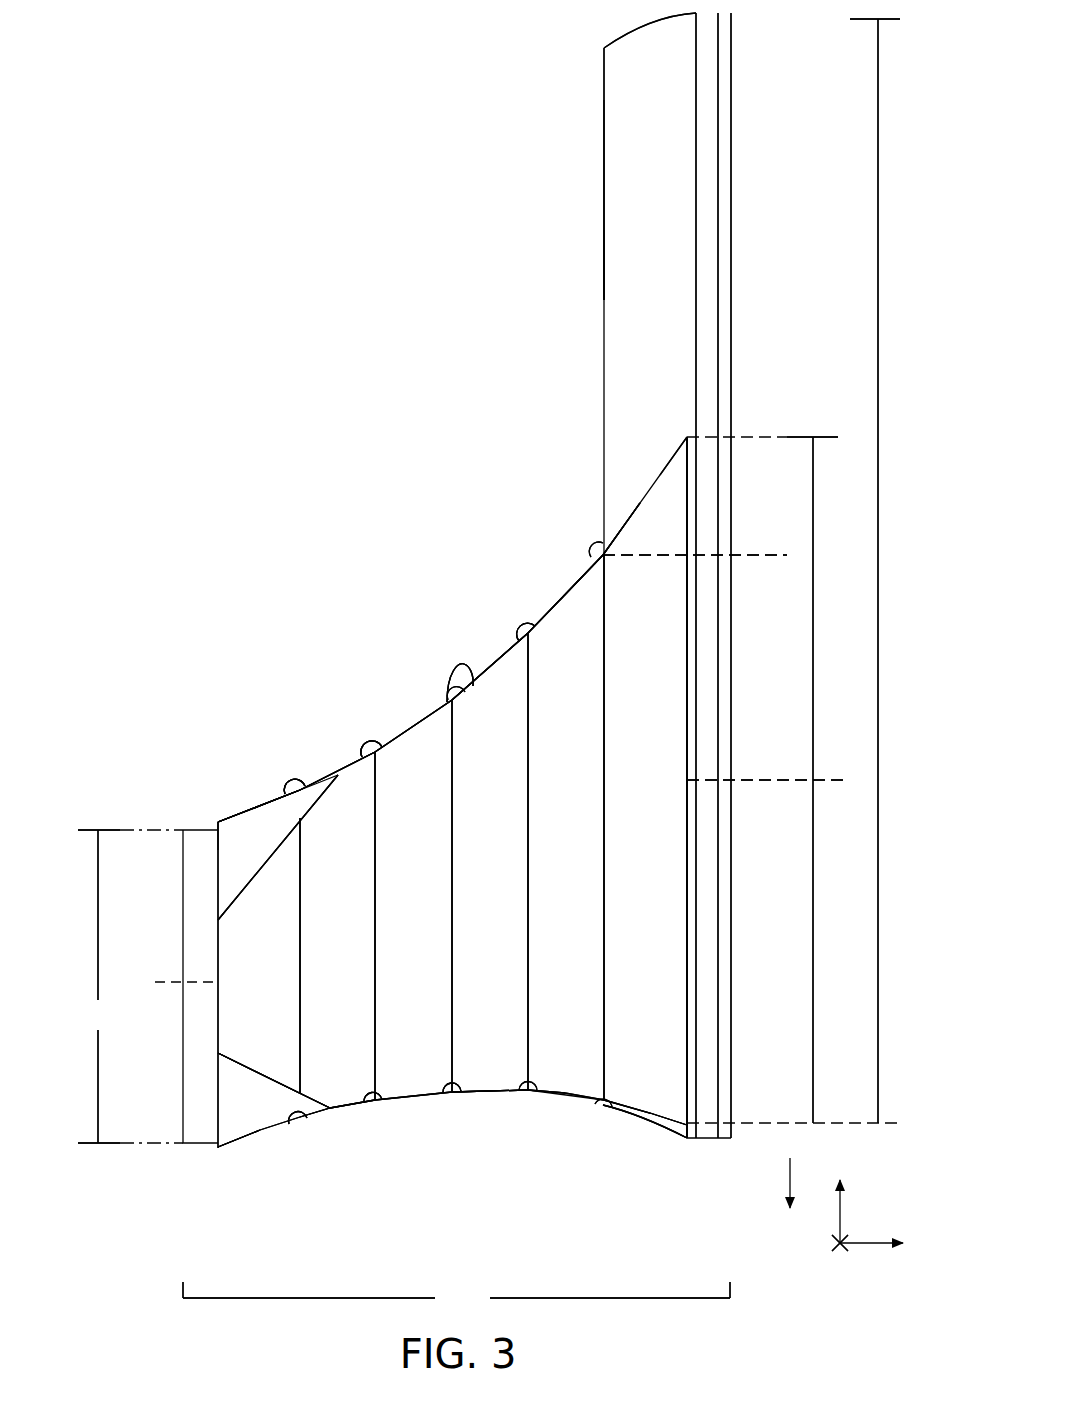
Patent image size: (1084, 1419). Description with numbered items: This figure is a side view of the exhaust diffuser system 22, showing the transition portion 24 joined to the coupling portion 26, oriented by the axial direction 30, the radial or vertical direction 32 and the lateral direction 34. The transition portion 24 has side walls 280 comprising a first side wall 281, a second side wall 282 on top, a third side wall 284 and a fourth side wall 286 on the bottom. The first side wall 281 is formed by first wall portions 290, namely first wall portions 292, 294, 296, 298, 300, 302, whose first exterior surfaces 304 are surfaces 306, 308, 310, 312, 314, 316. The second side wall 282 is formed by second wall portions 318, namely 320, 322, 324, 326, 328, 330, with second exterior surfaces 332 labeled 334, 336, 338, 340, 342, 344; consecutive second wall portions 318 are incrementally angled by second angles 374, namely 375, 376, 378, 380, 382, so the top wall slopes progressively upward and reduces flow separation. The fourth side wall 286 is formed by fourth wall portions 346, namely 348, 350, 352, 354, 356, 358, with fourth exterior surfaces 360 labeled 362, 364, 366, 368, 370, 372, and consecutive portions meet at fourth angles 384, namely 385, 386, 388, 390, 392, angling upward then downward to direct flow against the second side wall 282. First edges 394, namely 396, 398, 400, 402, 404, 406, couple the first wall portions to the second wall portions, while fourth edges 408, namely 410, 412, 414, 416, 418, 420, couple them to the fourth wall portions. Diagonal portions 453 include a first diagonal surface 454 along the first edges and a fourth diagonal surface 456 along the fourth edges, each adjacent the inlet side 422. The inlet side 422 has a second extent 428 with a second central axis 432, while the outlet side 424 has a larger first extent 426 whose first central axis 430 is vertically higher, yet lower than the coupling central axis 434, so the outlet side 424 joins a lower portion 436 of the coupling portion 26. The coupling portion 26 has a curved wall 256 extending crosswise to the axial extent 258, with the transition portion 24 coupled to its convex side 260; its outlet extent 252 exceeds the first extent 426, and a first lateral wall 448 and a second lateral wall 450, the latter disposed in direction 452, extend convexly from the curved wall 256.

The exhaust diffuser system 22 is at (266, 342).
The transition portion 24 is at (376, 540).
The coupling portion 26 is at (577, 258).
The axial direction 30 is at (882, 1247).
The radial or vertical direction 32 is at (836, 1200).
The lateral direction 34 is at (841, 1250).
The outlet extent 252 is at (878, 572).
The curved wall 256 is at (618, 101).
The axial extent 258 is at (456, 1296).
The convex side 260 is at (628, 135).
The side walls 280 is at (362, 778).
The first side wall 281 is at (502, 828).
The second side wall 282 is at (507, 478).
The third side wall 284 is at (263, 772).
The fourth side wall 286 is at (535, 1082).
The first wall portions 290 is at (667, 851).
The first wall portion 292 is at (236, 993).
The first wall portion 294 is at (319, 968).
The first wall portion 296 is at (394, 950).
The first wall portion 298 is at (471, 937).
The first wall portion 300 is at (546, 915).
The first wall portion 302 is at (624, 900).
The first exterior surfaces 304 is at (677, 816).
The first exterior surface 306 is at (228, 935).
The first exterior surface 308 is at (300, 790).
The first exterior surface 310 is at (432, 738).
The first exterior surface 312 is at (478, 658).
The first exterior surface 314 is at (575, 600).
The first exterior surface 316 is at (628, 575).
The second wall portions 318 is at (355, 570).
The second wall portion 320 is at (245, 812).
The second wall portion 322 is at (322, 790).
The second wall portion 324 is at (385, 746).
The second wall portion 326 is at (508, 635).
The second wall portion 328 is at (548, 608).
The second wall portion 330 is at (676, 452).
The second exterior surfaces 332 is at (432, 485).
The second exterior surface 334 is at (233, 820).
The second exterior surface 336 is at (352, 768).
The second exterior surface 338 is at (443, 690).
The second exterior surface 340 is at (486, 660).
The second exterior surface 342 is at (585, 612).
The second exterior surface 344 is at (607, 520).
The fourth wall portions 346 is at (325, 1233).
The fourth wall portion 348 is at (233, 1147).
The fourth wall portion 350 is at (360, 1107).
The fourth wall portion 352 is at (415, 1100).
The fourth wall portion 354 is at (500, 1093).
The fourth wall portion 356 is at (542, 1095).
The fourth wall portion 358 is at (628, 1113).
The fourth exterior surfaces 360 is at (343, 1235).
The fourth exterior surface 362 is at (252, 1140).
The fourth exterior surface 364 is at (338, 1113).
The fourth exterior surface 366 is at (402, 1100).
The fourth exterior surface 368 is at (482, 1100).
The fourth exterior surface 370 is at (567, 1097).
The fourth exterior surface 372 is at (667, 1115).
The second angles 374 is at (275, 598).
The second angle 375 is at (260, 790).
The second angle 376 is at (378, 752).
The second angle 378 is at (462, 704).
The second angle 380 is at (515, 628).
The second angle 382 is at (606, 532).
The fourth angles 384 is at (510, 1238).
The fourth angle 385 is at (295, 1130).
The fourth angle 386 is at (373, 1110).
The fourth angle 388 is at (457, 1110).
The fourth angle 390 is at (527, 1100).
The fourth angle 392 is at (603, 1107).
The first edges 394 is at (170, 700).
The first edge 396 is at (285, 812).
The first edge 398 is at (333, 780).
The first edge 400 is at (428, 748).
The first edge 402 is at (474, 688).
The first edge 404 is at (567, 590).
The first edge 406 is at (645, 508).
The fourth edges 408 is at (240, 1085).
The fourth edge 410 is at (293, 1120).
The fourth edge 412 is at (365, 1103).
The fourth edge 414 is at (430, 1092).
The fourth edge 416 is at (490, 1090).
The fourth edge 418 is at (582, 1097).
The fourth edge 420 is at (652, 1118).
The inlet side 422 is at (216, 1026).
The outlet side 424 is at (687, 633).
The first extent 426 is at (812, 858).
The second extent 428 is at (98, 986).
The first central axis 430 is at (752, 777).
The second central axis 432 is at (170, 982).
The coupling central axis 434 is at (752, 553).
The lower portion 436 is at (742, 918).
The first lateral wall 448 is at (648, 26).
The second lateral wall 450 is at (680, 1132).
The direction 452 is at (788, 1178).
The diagonal portions 453 is at (195, 818).
The first diagonal surface 454 is at (224, 856).
The fourth diagonal surface 456 is at (224, 1128).